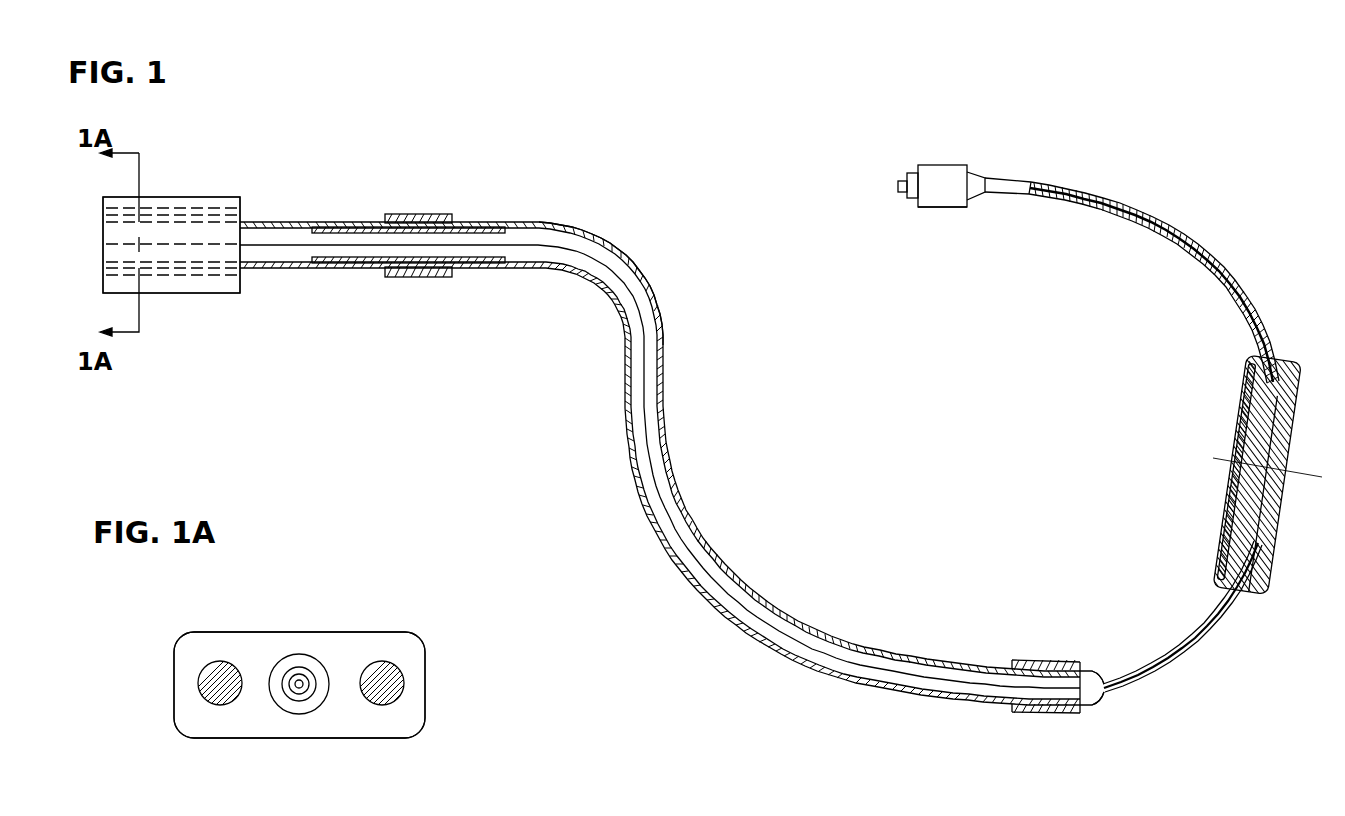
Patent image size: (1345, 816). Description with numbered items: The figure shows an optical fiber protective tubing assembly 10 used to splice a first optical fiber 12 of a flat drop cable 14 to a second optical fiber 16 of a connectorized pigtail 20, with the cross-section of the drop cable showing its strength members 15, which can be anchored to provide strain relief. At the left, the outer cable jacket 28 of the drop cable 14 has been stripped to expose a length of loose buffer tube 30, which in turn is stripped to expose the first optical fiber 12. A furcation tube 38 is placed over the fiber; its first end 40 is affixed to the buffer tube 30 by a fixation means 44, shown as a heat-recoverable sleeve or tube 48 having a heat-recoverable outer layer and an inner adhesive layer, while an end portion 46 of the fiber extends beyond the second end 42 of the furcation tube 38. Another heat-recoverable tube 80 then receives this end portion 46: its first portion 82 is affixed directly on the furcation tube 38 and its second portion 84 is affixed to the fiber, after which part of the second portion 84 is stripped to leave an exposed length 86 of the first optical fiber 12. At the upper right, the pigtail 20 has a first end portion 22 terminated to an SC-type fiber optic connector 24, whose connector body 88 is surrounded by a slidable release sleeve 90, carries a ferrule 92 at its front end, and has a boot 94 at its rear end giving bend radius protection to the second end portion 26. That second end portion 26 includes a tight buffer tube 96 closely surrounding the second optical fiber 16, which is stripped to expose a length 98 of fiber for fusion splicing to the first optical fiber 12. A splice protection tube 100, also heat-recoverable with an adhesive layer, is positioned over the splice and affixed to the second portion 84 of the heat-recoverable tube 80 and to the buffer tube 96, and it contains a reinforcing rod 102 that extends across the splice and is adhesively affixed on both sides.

In FIG. 1, the protective tubing assembly 10 is at (743, 677).
In FIG. 1, the first optical fiber 12 is at (294, 248).
In FIG. 1, the flat drop cable 14 is at (194, 186).
In FIG. 1A, the flat drop cable 14 is at (357, 632).
In FIG. 1, the strength members 15 is at (103, 210).
In FIG. 1A, the strength members 15 is at (393, 675).
In FIG. 1, the second optical fiber 16 is at (1283, 407).
In FIG. 1, the connectorized pigtail 20 is at (1022, 170).
In FIG. 1, the first end portion 22 is at (993, 195).
In FIG. 1, the fiber optic connector 24 is at (942, 208).
In FIG. 1, the second end portion 26 is at (1272, 445).
In FIG. 1, the outer cable jacket 28 is at (185, 293).
In FIG. 1A, the outer cable jacket 28 is at (425, 702).
In FIG. 1, the loose buffer tube 30 is at (262, 270).
In FIG. 1A, the loose buffer tube 30 is at (317, 690).
In FIG. 1, the furcation tube 38 is at (582, 242).
In FIG. 1, the first end 40 is at (458, 262).
In FIG. 1, the second end 42 is at (1090, 712).
In FIG. 1, the fixation means 44 is at (442, 213).
In FIG. 1, the end portion 46 is at (1100, 697).
In FIG. 1, the heat-recoverable tube 48 is at (393, 277).
In FIG. 1, the heat-recoverable tube 80 is at (1098, 665).
In FIG. 1, the first portion 82 is at (1030, 662).
In FIG. 1, the second portion 84 is at (1237, 612).
In FIG. 1, the exposed length 86 is at (1268, 507).
In FIG. 1, the connector body 88 is at (908, 173).
In FIG. 1, the release sleeve 90 is at (930, 163).
In FIG. 1, the ferrule 92 is at (898, 192).
In FIG. 1, the boot 94 is at (977, 172).
In FIG. 1, the tight buffer tube 96 is at (1228, 258).
In FIG. 1, the exposed length 98 is at (1273, 424).
In FIG. 1, the splice protection tube 100 is at (1218, 558).
In FIG. 1, the reinforcing rod 102 is at (1230, 517).